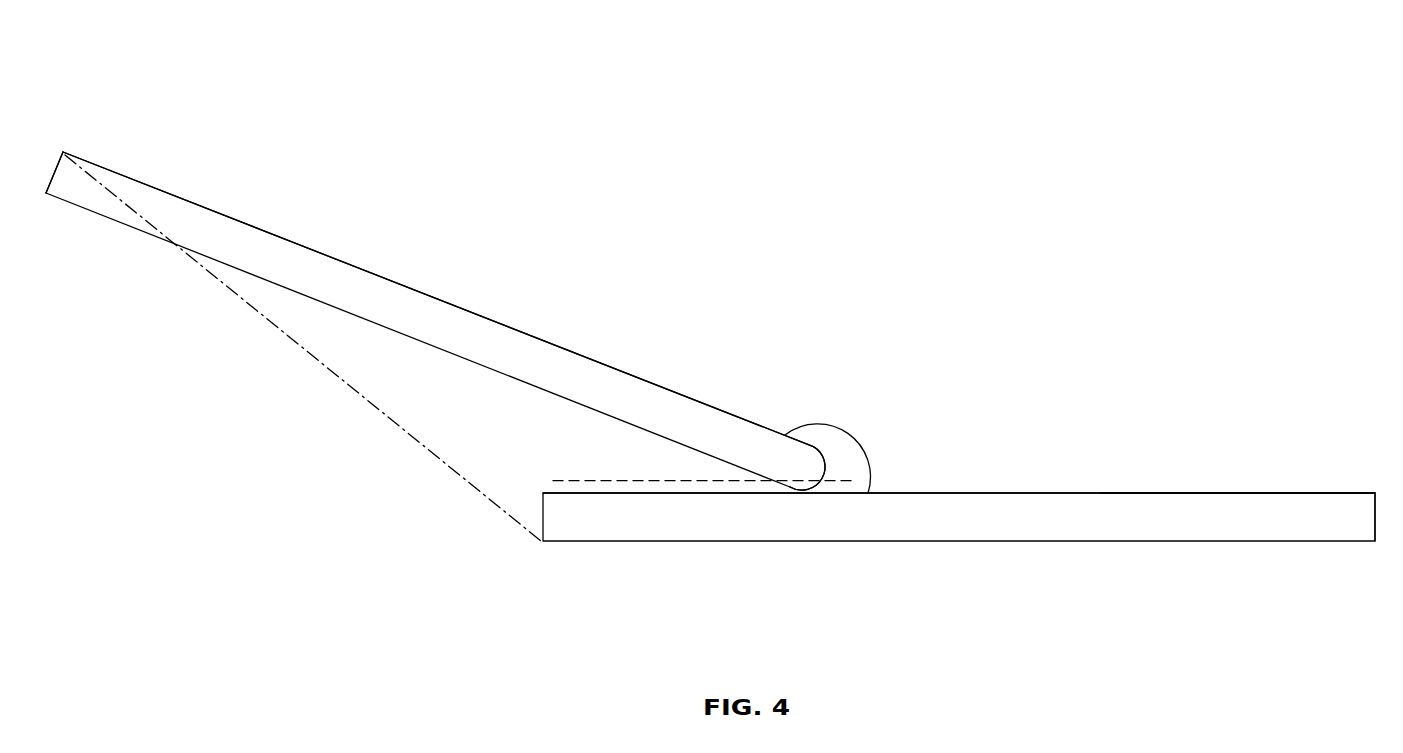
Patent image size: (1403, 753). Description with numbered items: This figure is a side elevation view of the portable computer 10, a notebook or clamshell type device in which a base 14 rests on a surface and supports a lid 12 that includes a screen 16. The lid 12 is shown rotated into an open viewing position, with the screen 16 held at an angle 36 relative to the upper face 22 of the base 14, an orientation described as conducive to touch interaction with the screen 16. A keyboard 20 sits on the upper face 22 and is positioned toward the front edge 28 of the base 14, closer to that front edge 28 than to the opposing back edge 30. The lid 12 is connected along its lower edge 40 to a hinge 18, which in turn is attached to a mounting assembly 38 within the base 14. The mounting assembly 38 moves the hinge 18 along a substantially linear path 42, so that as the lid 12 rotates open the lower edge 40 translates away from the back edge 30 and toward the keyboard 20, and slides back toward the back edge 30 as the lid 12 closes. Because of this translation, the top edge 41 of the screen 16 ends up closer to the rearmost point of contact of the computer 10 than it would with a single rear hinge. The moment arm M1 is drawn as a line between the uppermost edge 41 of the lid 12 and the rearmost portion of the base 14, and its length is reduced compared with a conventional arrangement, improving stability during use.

The portable computer 10 is at (249, 54).
The lid 12 is at (378, 223).
The base 14 is at (1227, 434).
The screen 16 is at (477, 312).
The hinge 18 is at (831, 448).
The keyboard 20 is at (1087, 479).
The upper face 22 is at (1185, 493).
The front edge 28 is at (1373, 493).
The back edge 30 is at (537, 485).
The angle 36 is at (860, 447).
The mounting assembly 38 is at (613, 466).
The lower edge 40 is at (823, 453).
The top edge 41 is at (63, 150).
The linear path 42 is at (675, 485).
The moment arm M1 is at (338, 386).